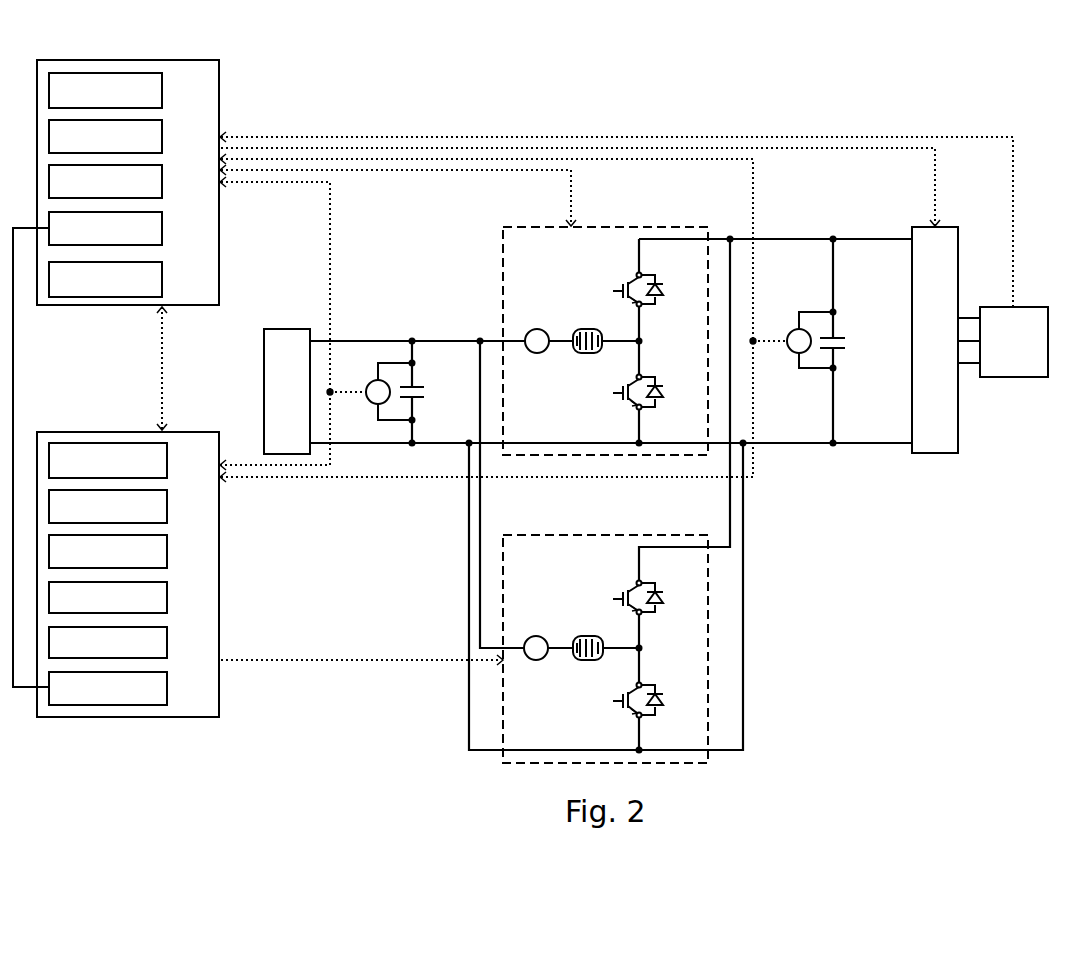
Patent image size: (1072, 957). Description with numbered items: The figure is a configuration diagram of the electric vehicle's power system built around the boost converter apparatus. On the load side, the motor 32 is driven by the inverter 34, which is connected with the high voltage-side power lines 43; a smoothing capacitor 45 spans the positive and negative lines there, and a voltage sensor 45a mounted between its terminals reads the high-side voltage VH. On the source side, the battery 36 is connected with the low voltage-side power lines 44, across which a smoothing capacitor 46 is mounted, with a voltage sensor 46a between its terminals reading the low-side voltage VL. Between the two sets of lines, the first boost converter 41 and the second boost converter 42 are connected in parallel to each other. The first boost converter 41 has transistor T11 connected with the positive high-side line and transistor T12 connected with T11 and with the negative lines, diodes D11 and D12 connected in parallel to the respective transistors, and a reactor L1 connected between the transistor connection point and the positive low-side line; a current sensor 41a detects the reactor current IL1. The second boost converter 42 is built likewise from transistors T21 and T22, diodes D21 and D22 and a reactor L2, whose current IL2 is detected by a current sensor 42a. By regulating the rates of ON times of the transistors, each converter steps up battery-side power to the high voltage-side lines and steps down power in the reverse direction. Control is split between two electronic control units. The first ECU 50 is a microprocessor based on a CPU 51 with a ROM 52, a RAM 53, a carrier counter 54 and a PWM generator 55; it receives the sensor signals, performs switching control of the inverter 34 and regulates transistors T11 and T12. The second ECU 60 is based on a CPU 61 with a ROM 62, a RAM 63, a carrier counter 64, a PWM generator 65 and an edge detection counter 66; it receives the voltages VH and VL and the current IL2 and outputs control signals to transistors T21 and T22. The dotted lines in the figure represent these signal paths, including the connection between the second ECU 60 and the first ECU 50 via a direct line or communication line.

The motor 32 is at (1030, 307).
The inverter 34 is at (950, 227).
The battery 36 is at (286, 329).
The first boost converter 41 is at (600, 222).
The current sensor 41a is at (536, 328).
The reactor L1 is at (587, 328).
The transistor T11 is at (628, 286).
The diode D11 is at (662, 288).
The transistor T12 is at (628, 390).
The diode D12 is at (662, 392).
The second boost converter 42 is at (600, 532).
The current sensor 42a is at (536, 636).
The reactor L2 is at (587, 635).
The transistor T21 is at (628, 593).
The diode D21 is at (662, 595).
The transistor T22 is at (628, 698).
The diode D22 is at (662, 700).
The high voltage-side power lines 43 is at (877, 240).
The low voltage-side power lines 44 is at (447, 345).
The smoothing capacitor 45 is at (838, 335).
The voltage sensor 45a is at (796, 329).
The smoothing capacitor 46 is at (418, 385).
The voltage sensor 46a is at (374, 380).
The first ECU 50 is at (127, 60).
The CPU 51 is at (162, 93).
The ROM 52 is at (162, 140).
The RAM 53 is at (162, 180).
The carrier counter 54 is at (162, 230).
The PWM generator 55 is at (162, 280).
The second ECU 60 is at (127, 432).
The CPU 61 is at (167, 463).
The ROM 62 is at (167, 510).
The RAM 63 is at (167, 555).
The carrier counter 64 is at (167, 600).
The PWM generator 65 is at (167, 645).
The edge detection counter 66 is at (167, 690).